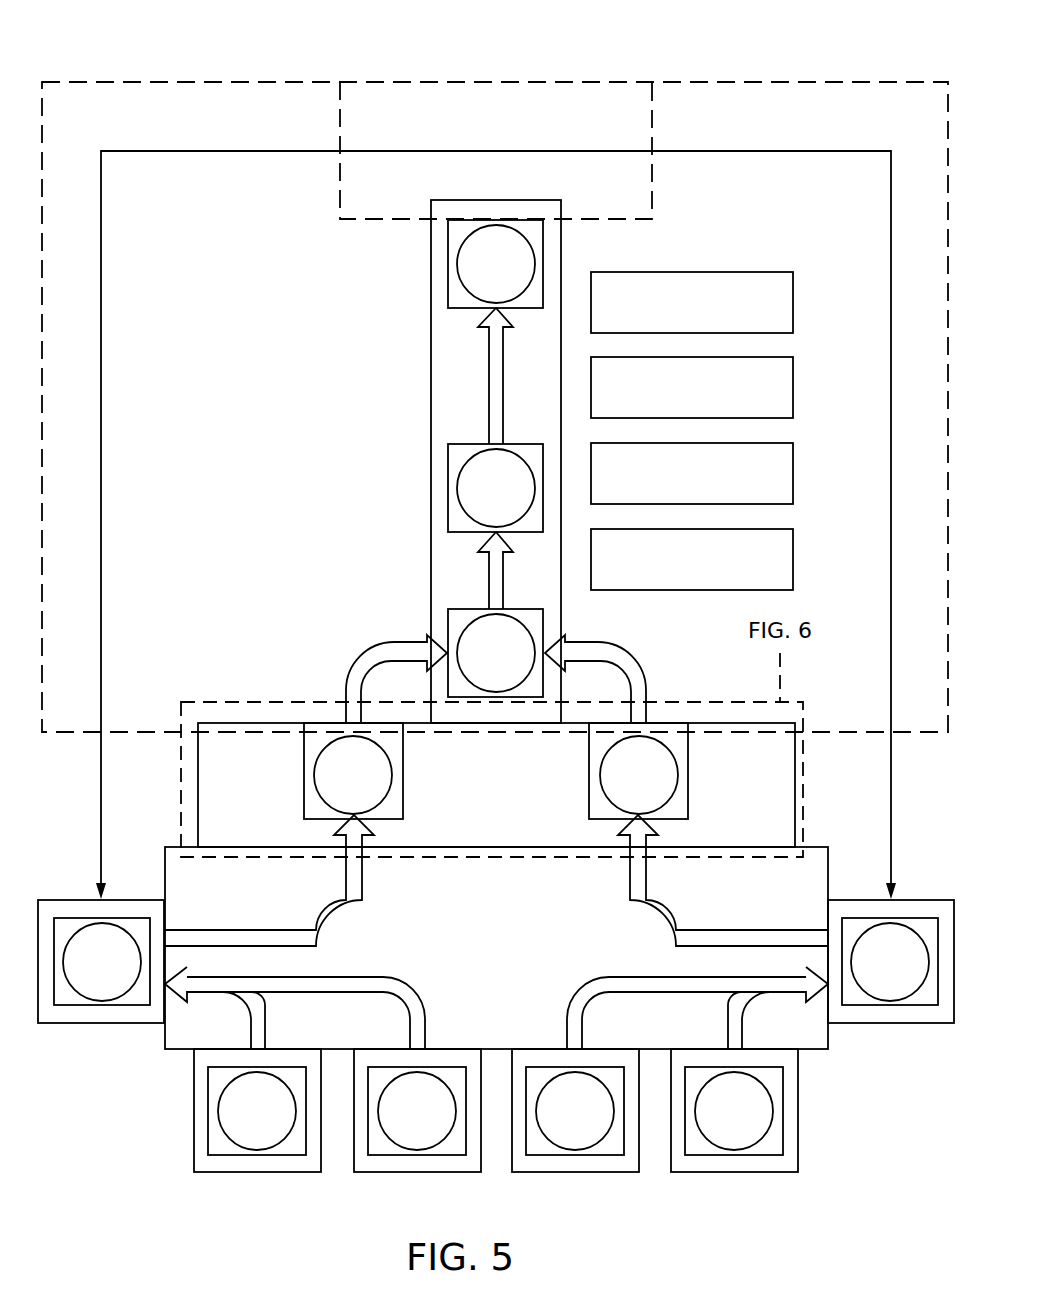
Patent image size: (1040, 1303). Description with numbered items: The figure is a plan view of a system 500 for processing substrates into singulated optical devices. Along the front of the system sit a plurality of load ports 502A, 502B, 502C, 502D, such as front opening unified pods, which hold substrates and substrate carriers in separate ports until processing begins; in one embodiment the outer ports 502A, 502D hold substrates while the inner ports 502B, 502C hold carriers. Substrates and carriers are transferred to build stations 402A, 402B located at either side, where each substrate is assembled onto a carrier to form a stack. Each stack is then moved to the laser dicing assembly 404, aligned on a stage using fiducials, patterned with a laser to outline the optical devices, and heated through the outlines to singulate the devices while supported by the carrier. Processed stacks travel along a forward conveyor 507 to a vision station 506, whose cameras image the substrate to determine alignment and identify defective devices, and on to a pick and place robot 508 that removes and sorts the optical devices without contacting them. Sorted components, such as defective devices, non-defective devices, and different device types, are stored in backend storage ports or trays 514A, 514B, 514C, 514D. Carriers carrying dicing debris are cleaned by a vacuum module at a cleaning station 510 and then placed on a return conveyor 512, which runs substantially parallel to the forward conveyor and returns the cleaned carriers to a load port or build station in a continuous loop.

The system 500 is at (121, 50).
The return conveyor 512 is at (474, 164).
The cleaning station 510 is at (475, 274).
The forward conveyor 507 is at (452, 380).
The robot 508 is at (475, 499).
The vision station 506 is at (475, 664).
The backend storage port 514A is at (664, 314).
The backend storage port 514B is at (664, 401).
The backend storage port 514C is at (664, 487).
The backend storage port 514D is at (664, 572).
The laser dicing assembly 404 is at (475, 799).
The build station 402A is at (75, 974).
The build station 402B is at (863, 974).
The load port 502A is at (230, 1122).
The load port 502B is at (390, 1122).
The load port 502C is at (548, 1122).
The load port 502D is at (707, 1122).